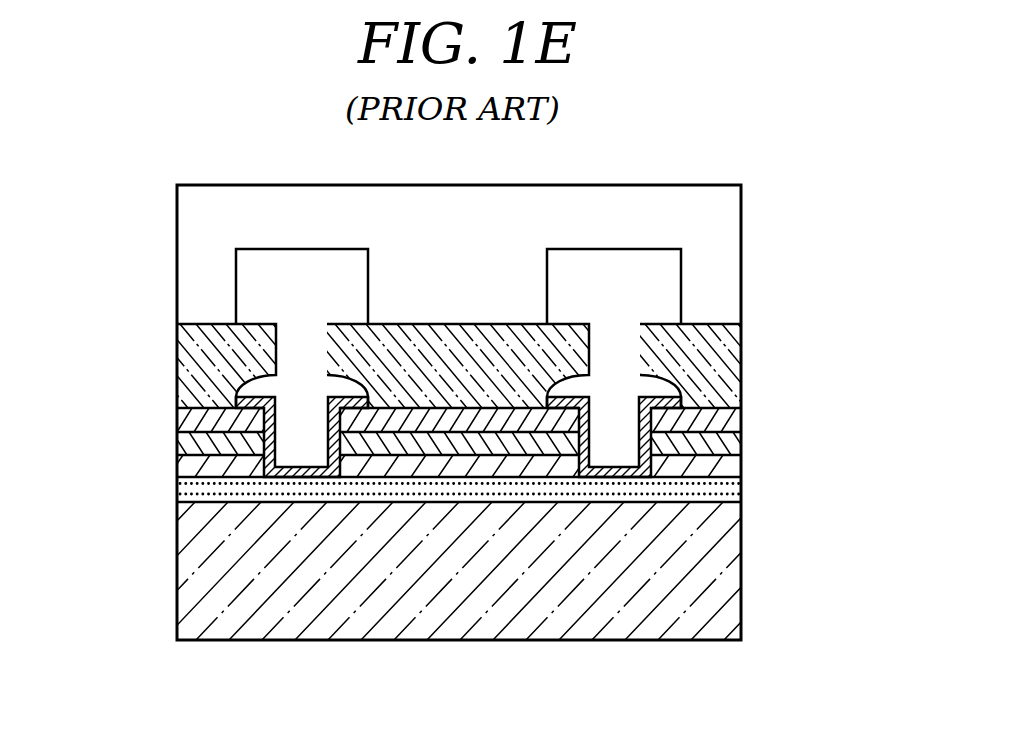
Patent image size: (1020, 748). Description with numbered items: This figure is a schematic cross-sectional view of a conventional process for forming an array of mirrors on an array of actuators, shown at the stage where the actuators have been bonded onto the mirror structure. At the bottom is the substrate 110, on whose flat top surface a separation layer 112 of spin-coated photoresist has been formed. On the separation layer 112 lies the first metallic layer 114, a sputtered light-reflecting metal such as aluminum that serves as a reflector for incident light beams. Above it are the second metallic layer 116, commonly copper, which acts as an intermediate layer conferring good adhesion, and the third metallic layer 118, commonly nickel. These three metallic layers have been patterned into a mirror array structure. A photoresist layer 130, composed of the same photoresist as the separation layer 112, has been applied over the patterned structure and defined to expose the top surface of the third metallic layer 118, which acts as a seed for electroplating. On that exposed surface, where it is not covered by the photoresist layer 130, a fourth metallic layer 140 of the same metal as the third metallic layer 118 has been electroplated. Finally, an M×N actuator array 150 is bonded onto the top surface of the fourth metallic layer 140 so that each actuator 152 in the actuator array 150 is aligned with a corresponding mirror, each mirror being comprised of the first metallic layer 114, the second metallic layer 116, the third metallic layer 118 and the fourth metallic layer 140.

The substrate 110 is at (730, 613).
The separation layer 112 is at (742, 493).
The first metallic layer 114 is at (187, 465).
The second metallic layer 116 is at (742, 440).
The third metallic layer 118 is at (190, 419).
The photoresist layer 130 is at (652, 396).
The fourth metallic layer 140 is at (717, 377).
The M×N actuator array 150 is at (155, 183).
The actuator 152 is at (433, 297).